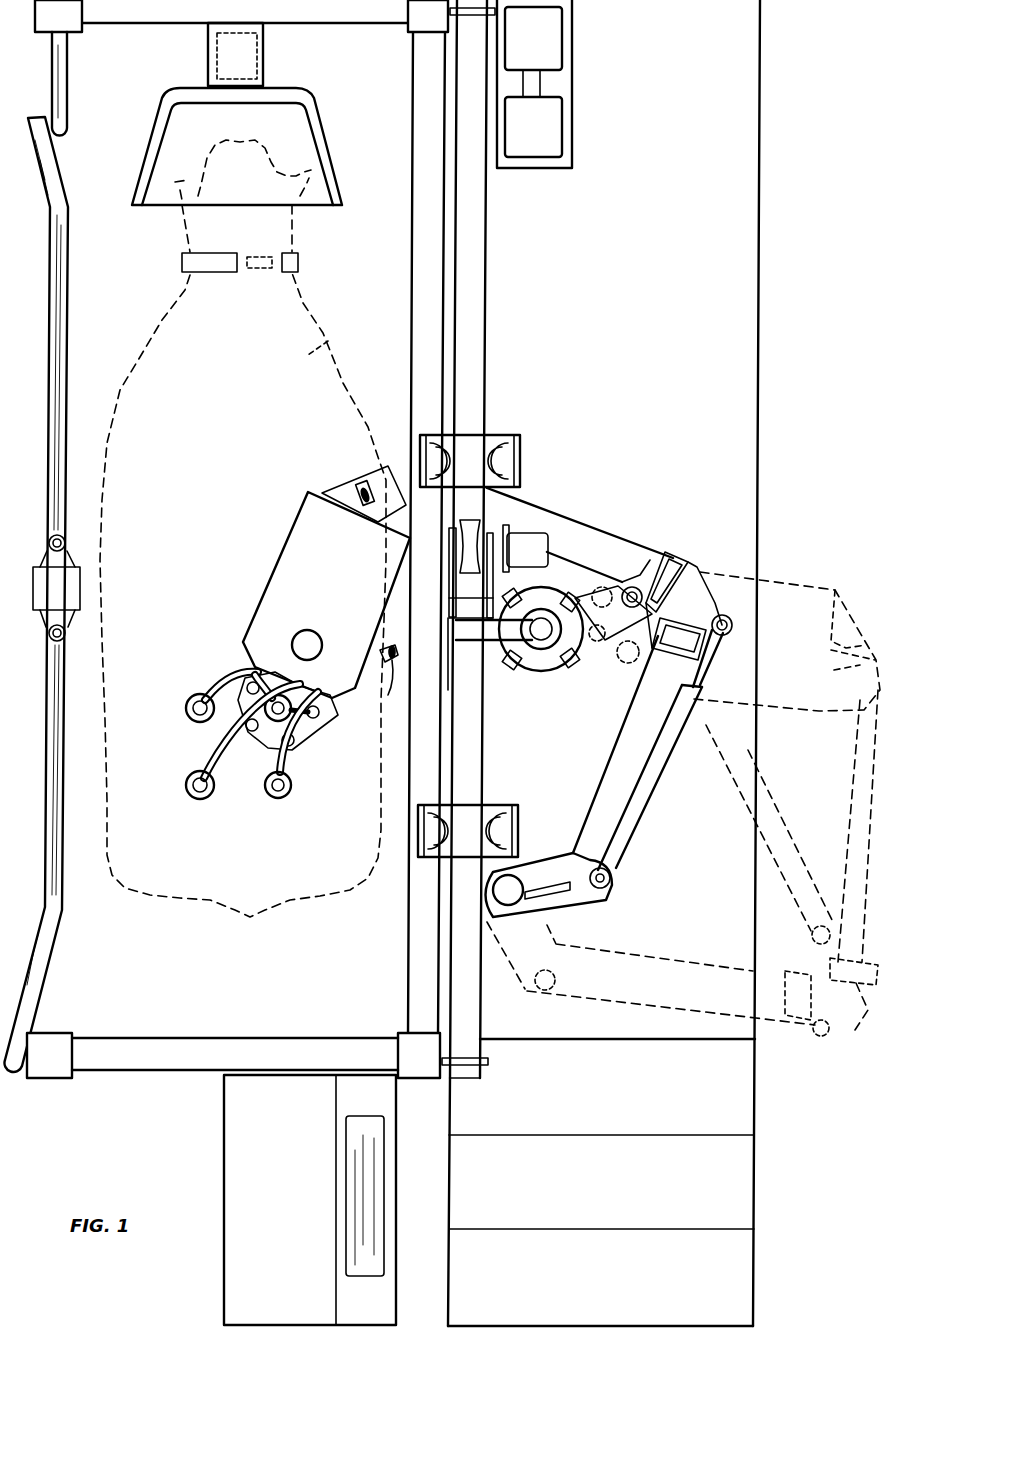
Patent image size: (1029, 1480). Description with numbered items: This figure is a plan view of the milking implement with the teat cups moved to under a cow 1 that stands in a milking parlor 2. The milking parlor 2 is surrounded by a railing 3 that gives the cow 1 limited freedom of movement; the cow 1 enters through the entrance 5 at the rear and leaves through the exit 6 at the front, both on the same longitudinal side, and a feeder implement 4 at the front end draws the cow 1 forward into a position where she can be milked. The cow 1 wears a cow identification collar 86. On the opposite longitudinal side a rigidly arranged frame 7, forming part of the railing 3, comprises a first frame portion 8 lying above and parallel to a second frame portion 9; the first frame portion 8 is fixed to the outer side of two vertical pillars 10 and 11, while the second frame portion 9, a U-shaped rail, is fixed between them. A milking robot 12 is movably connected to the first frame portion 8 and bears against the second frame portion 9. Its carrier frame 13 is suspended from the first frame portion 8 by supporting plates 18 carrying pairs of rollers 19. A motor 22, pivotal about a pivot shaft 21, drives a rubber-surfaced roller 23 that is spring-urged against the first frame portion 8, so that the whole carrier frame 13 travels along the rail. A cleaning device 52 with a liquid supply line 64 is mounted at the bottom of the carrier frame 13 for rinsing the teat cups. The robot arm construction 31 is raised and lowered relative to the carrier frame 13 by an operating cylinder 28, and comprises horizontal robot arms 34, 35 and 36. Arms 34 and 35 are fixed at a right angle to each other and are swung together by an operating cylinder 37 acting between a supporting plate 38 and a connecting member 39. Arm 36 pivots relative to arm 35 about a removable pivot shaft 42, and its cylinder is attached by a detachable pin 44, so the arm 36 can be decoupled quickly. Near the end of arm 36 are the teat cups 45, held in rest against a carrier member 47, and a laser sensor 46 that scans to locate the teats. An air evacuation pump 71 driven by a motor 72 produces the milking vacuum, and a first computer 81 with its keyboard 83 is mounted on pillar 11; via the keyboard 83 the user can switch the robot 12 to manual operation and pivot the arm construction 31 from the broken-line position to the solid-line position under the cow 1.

The cow 1 is at (312, 350).
The milking parlor 2 is at (178, 961).
The railing 3 is at (70, 86).
The feeder implement 4 is at (303, 128).
The entrance 5 is at (55, 927).
The exit 6 is at (66, 272).
The frame 7 is at (408, 916).
The first frame portion 8 is at (478, 227).
The second frame portion 9 is at (420, 230).
The vertical pillar 10 is at (84, 30).
The vertical pillar 11 is at (60, 1045).
The milking robot 12 is at (802, 580).
The carrier frame 13 is at (642, 560).
The supporting plates 18 is at (420, 432).
The rollers 19 is at (505, 461).
The pivot shaft 21 is at (448, 606).
The motor 22 is at (545, 535).
The roller 23 is at (460, 551).
The operating cylinder 28 is at (512, 906).
The robot arm construction 31 is at (634, 531).
The robot arm 34 is at (640, 800).
The robot arm 35 is at (585, 545).
The robot arm 36 is at (300, 534).
The operating cylinder 37 is at (636, 830).
The supporting plate 38 is at (600, 905).
The connecting member 39 is at (700, 570).
The pivot shaft 42 is at (372, 490).
The detachable pin 44 is at (372, 690).
The teat cups 45 is at (190, 783).
The sensor 46 is at (309, 630).
The carrier member 47 is at (248, 795).
The cleaning device 52 is at (554, 676).
The line 64 is at (500, 668).
The air evacuation pump 71 is at (553, 128).
The motor 72 is at (553, 34).
The first computer 81 is at (224, 1127).
The keyboard 83 is at (356, 1200).
The cow identification collar 86 is at (226, 272).